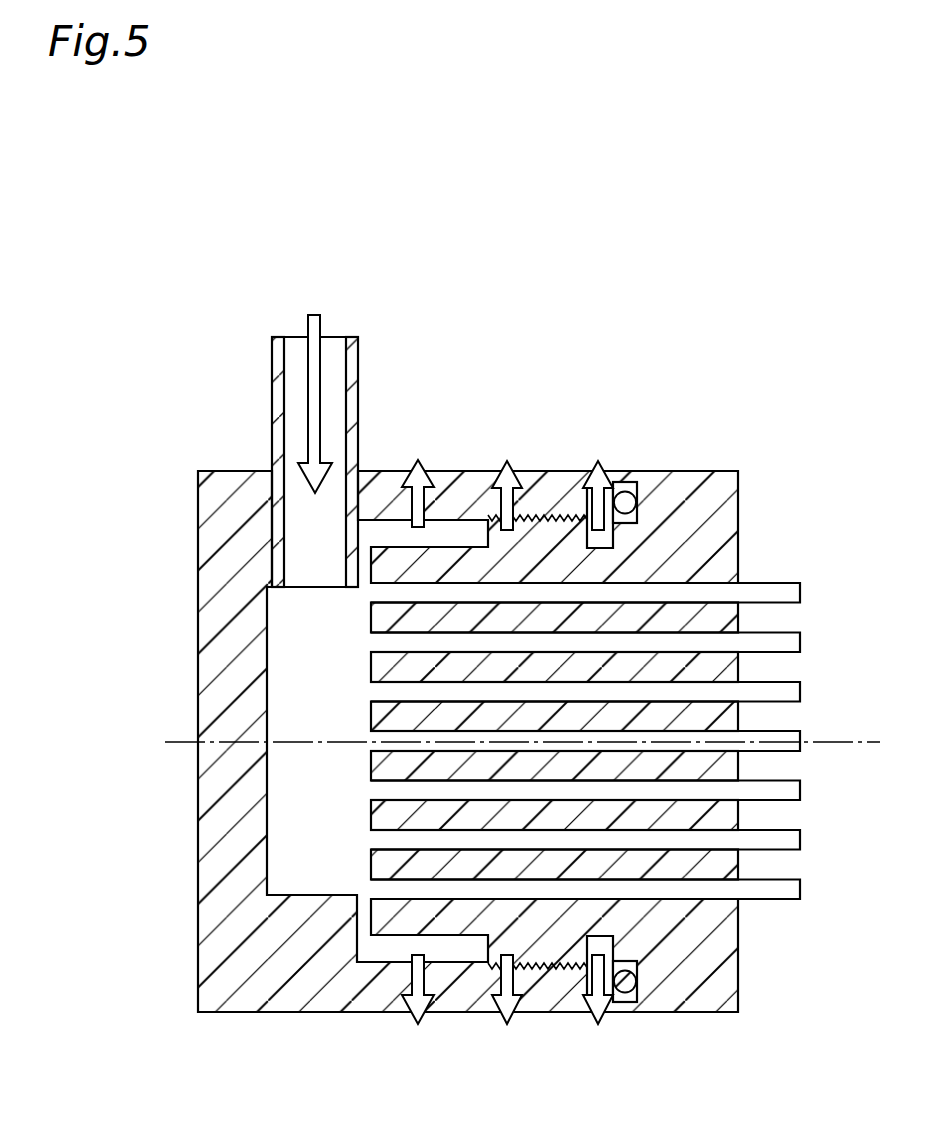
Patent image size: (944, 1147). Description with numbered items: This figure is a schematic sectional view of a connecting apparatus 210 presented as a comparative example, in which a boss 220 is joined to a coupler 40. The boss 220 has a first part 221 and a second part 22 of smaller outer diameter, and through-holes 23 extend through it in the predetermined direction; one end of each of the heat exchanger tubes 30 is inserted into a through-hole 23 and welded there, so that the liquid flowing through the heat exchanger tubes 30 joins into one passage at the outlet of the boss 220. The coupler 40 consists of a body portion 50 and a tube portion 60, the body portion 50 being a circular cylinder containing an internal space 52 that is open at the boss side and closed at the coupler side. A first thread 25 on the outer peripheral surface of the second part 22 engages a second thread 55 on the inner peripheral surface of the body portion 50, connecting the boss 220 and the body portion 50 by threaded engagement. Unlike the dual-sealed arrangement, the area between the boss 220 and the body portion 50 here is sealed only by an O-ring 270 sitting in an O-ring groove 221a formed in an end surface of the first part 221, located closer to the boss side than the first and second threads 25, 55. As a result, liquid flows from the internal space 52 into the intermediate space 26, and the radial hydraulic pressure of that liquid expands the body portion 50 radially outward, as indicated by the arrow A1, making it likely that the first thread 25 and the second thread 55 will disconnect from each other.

The connecting apparatus 210 is at (501, 667).
The boss 220 is at (607, 705).
The first part 221 is at (708, 466).
The O-ring groove 221a is at (633, 486).
The O-ring 270 is at (628, 508).
The first thread 25 is at (592, 567).
The second part 22 is at (545, 553).
The through-holes 23 is at (655, 873).
The intermediate space 26 is at (462, 533).
The heat exchanger tubes 30 is at (772, 901).
The coupler 40 is at (430, 708).
The body portion 50 is at (453, 746).
The internal space 52 is at (296, 882).
The second thread 55 is at (560, 513).
The tube portion 60 is at (272, 372).
The arrow A1 is at (412, 495).